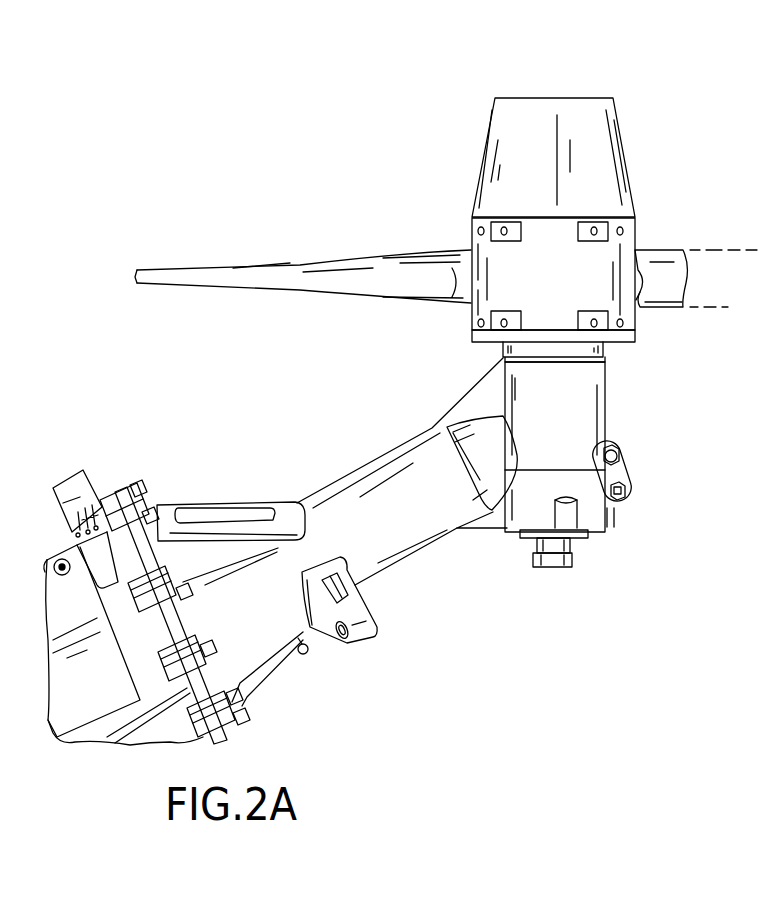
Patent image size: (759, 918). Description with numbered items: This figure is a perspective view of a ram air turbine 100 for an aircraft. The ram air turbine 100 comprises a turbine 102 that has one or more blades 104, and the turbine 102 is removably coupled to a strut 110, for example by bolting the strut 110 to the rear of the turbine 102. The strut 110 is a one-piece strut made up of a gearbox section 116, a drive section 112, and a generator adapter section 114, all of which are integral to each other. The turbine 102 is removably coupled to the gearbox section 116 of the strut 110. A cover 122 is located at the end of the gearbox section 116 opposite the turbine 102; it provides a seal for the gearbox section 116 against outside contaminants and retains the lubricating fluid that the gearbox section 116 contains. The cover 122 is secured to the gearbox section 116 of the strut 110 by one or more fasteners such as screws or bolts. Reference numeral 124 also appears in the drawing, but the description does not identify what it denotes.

The ram air turbine 100 is at (673, 111).
The turbine 102 is at (548, 97).
The blade 104 is at (297, 262).
The strut 110 is at (350, 487).
The drive section 112 is at (416, 560).
The generator adapter section 114 is at (206, 505).
The gearbox section 116 is at (628, 468).
The cover 122 is at (617, 533).
The fitting 124 is at (560, 568).